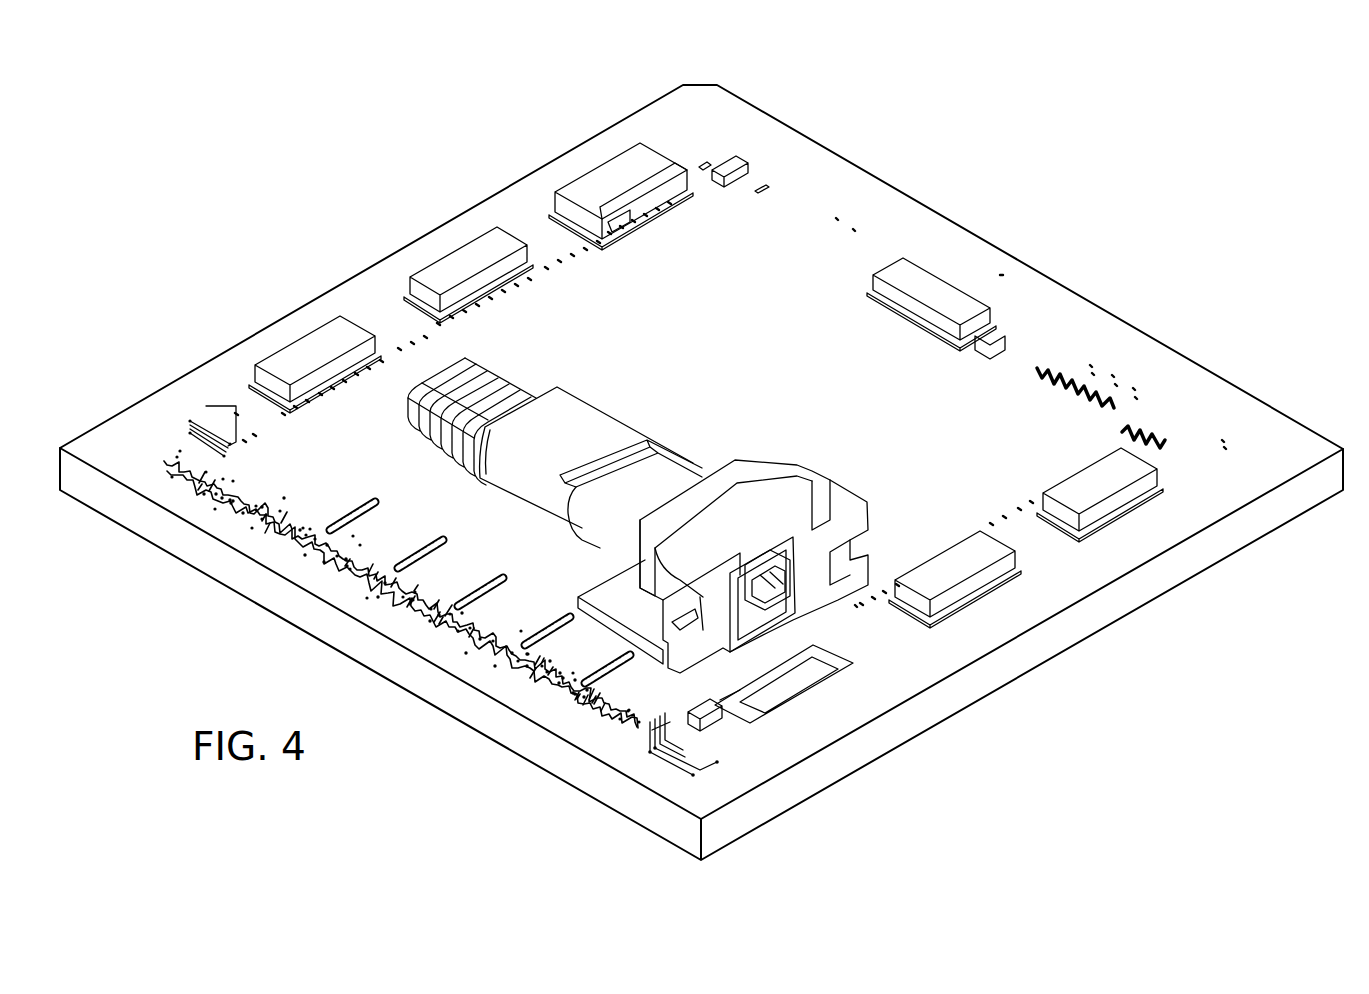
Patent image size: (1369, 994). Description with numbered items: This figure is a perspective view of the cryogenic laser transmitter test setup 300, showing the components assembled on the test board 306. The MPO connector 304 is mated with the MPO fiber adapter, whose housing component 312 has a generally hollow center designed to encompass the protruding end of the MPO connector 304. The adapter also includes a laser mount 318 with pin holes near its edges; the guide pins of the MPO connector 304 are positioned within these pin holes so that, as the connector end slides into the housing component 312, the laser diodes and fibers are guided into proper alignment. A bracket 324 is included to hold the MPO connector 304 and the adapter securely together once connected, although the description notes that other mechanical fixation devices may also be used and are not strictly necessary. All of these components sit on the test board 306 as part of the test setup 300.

The cryogenic laser transmitter test setup 300 is at (212, 212).
The MPO connector 304 is at (568, 408).
The test board 306 is at (1063, 297).
The housing component 312 is at (742, 468).
The laser mount 318 is at (773, 594).
The bracket 324 is at (598, 592).